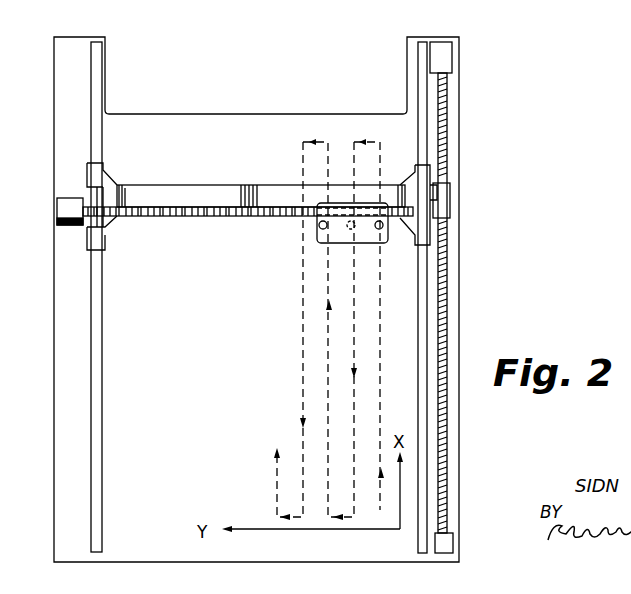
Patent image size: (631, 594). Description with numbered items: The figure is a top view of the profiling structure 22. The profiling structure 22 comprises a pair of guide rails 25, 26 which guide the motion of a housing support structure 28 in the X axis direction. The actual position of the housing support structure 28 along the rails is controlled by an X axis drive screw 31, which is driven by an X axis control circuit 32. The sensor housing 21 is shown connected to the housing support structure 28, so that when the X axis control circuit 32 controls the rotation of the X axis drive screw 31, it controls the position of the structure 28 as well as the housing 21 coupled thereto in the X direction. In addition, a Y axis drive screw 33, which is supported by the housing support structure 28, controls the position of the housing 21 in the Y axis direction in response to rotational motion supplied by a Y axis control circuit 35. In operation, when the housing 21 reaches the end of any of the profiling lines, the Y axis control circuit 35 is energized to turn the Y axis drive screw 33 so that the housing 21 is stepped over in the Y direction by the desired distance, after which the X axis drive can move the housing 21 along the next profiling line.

The sensor housing 21 is at (388, 237).
The profiling structure 22 is at (260, 238).
The guide rail 25 is at (417, 142).
The guide rail 26 is at (100, 149).
The housing support structure 28 is at (193, 185).
The X axis drive screw 31 is at (447, 130).
The X axis control circuit 32 is at (452, 62).
The Y axis drive screw 33 is at (213, 216).
The Y axis control circuit 35 is at (73, 197).